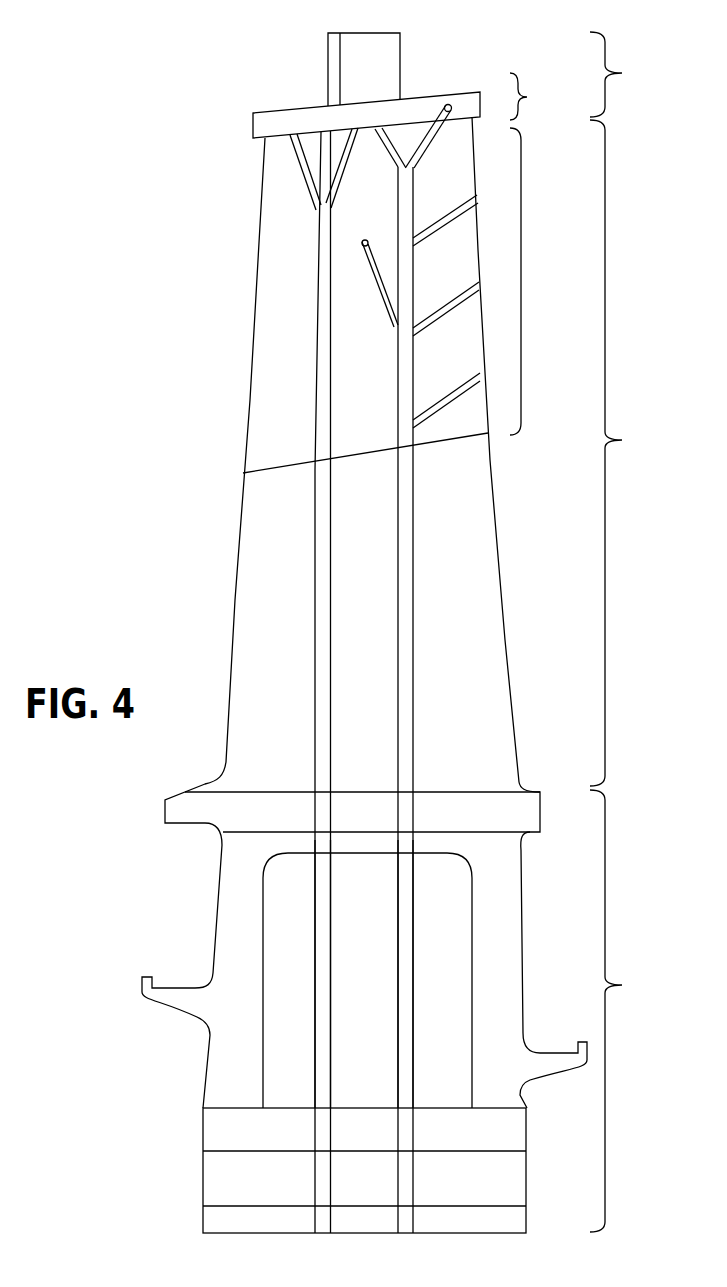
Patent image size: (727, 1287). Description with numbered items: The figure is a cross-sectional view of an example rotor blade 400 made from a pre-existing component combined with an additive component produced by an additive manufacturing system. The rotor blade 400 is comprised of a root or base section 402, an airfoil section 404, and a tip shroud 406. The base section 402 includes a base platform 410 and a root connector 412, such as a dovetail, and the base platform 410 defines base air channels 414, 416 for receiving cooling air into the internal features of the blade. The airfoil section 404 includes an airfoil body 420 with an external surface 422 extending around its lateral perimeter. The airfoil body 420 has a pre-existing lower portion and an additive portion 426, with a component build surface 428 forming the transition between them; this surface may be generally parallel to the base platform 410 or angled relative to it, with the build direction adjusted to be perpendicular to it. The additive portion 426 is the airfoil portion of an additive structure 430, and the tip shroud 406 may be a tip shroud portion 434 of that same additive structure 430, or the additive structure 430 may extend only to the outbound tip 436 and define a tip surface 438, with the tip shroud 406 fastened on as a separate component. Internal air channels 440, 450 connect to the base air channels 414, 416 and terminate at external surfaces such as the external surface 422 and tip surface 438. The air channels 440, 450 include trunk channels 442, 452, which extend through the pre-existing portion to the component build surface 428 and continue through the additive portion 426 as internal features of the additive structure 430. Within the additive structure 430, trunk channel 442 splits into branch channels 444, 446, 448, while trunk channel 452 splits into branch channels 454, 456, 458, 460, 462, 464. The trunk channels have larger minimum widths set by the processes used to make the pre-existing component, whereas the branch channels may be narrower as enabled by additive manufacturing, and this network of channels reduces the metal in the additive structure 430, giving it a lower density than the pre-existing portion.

The rotor blade 400 is at (142, 114).
The base section 402 is at (630, 1011).
The airfoil section 404 is at (630, 453).
The tip shroud 406 is at (499, 74).
The base platform 410 is at (183, 807).
The root connector 412 is at (203, 1172).
The base air channel 414 is at (318, 1045).
The base air channel 416 is at (408, 1012).
The airfoil body 420 is at (540, 427).
The external surface 422 is at (253, 318).
The additive portion 426 is at (278, 260).
The component build surface 428 is at (243, 473).
The additive structure 430 is at (540, 281).
The tip shroud portion 434 is at (413, 105).
The outbound tip 436 is at (263, 143).
The tip surface 438 is at (323, 130).
The air channel 440 is at (313, 693).
The trunk channel 442 is at (325, 368).
The branch channel 444 is at (290, 180).
The branch channel 446 is at (325, 157).
The branch channel 448 is at (343, 160).
The air channel 450 is at (417, 707).
The trunk channel 452 is at (403, 478).
The branch channel 454 is at (373, 277).
The branch channel 456 is at (397, 147).
The branch channel 458 is at (432, 123).
The branch channel 460 is at (440, 233).
The branch channel 462 is at (443, 310).
The branch channel 464 is at (445, 397).